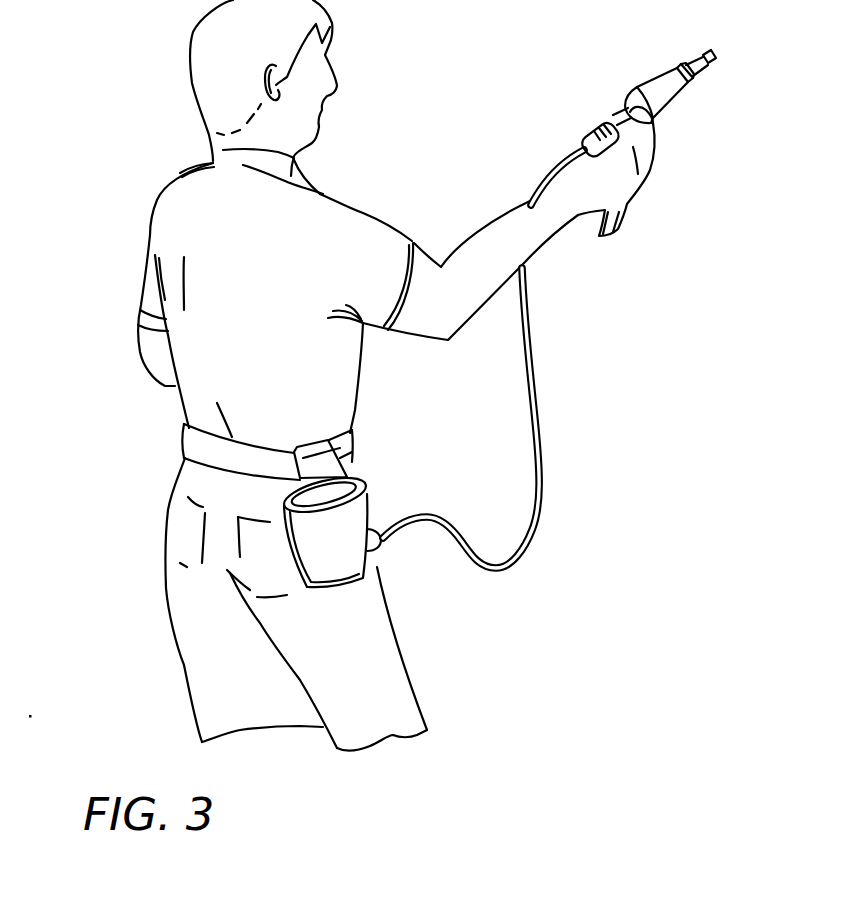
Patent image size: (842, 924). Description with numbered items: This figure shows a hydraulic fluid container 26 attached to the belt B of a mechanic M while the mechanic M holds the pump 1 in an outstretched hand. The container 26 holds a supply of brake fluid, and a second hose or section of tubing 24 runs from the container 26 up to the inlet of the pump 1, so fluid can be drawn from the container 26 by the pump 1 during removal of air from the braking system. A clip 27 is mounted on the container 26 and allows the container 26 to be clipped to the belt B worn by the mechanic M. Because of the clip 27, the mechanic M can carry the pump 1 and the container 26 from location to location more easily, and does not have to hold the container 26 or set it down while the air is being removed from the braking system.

The mechanic M is at (136, 96).
The pump 1 is at (625, 81).
The second hose or section of tubing 24 is at (537, 373).
The container 26 is at (377, 565).
The clip 27 is at (317, 465).
The belt B is at (185, 458).